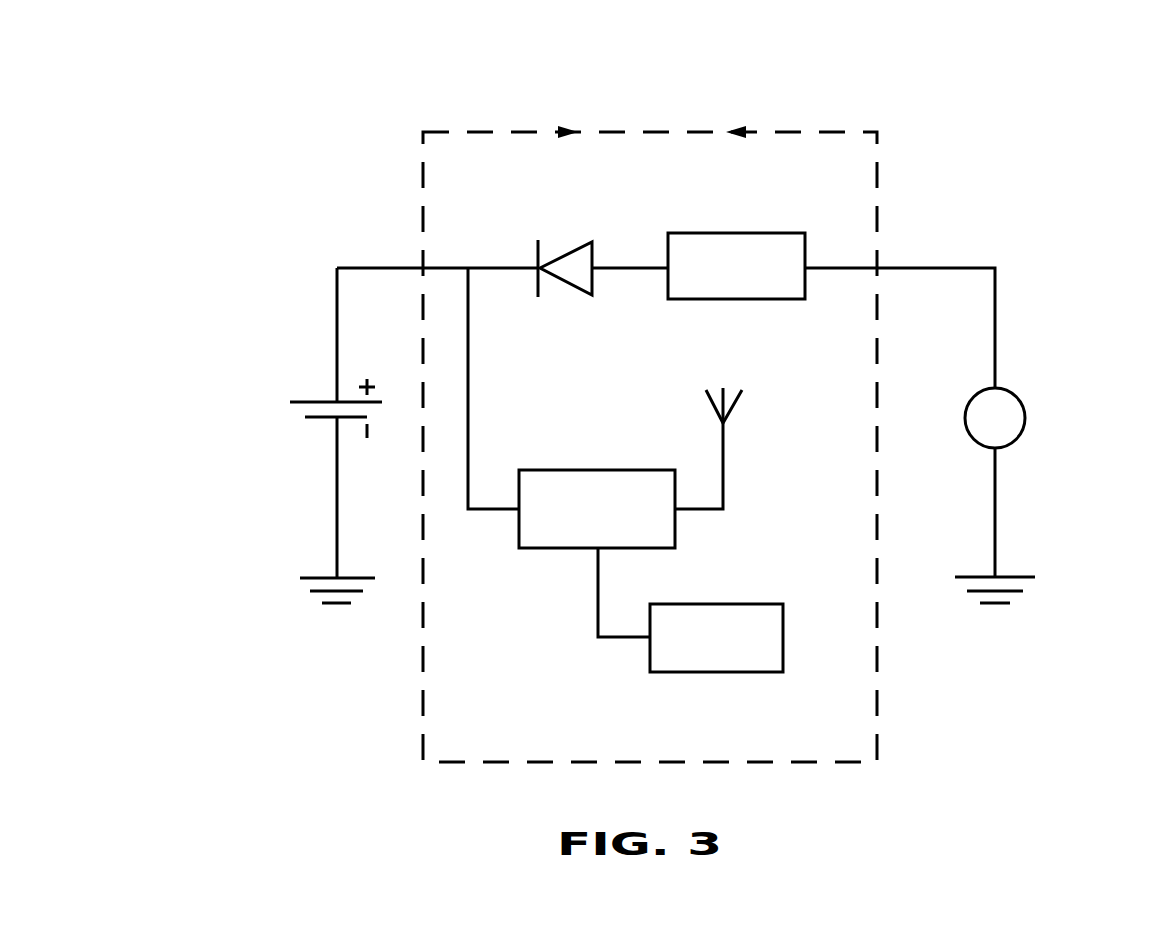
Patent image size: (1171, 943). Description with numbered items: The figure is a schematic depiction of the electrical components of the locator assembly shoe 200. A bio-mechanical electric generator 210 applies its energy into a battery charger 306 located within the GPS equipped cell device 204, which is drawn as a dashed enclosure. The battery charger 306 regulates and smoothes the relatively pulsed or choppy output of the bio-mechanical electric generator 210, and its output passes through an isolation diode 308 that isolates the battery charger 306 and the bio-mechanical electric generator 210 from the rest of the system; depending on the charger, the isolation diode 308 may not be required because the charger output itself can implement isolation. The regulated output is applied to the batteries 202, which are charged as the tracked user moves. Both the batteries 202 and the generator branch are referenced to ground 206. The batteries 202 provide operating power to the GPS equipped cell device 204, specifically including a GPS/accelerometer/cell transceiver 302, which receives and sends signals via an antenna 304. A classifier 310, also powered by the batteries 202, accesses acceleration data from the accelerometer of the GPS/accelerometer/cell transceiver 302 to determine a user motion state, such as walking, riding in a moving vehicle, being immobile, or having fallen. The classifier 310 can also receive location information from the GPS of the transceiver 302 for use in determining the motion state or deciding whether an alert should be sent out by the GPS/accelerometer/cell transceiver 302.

The locator assembly shoe 200 is at (965, 112).
The batteries 202 is at (290, 402).
The GPS equipped cell device 204 is at (662, 116).
The ground 206 is at (300, 578).
The bio-mechanical electric generator 210 is at (1022, 400).
The GPS/accelerometer/cell transceiver 302 is at (523, 548).
The antenna 304 is at (726, 454).
The battery charger 306 is at (712, 233).
The isolation diode 308 is at (558, 253).
The classifier 310 is at (720, 604).